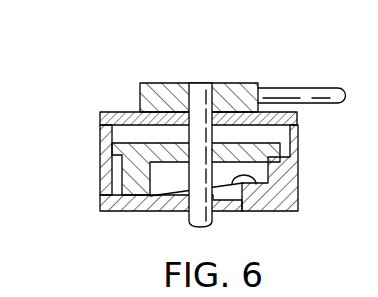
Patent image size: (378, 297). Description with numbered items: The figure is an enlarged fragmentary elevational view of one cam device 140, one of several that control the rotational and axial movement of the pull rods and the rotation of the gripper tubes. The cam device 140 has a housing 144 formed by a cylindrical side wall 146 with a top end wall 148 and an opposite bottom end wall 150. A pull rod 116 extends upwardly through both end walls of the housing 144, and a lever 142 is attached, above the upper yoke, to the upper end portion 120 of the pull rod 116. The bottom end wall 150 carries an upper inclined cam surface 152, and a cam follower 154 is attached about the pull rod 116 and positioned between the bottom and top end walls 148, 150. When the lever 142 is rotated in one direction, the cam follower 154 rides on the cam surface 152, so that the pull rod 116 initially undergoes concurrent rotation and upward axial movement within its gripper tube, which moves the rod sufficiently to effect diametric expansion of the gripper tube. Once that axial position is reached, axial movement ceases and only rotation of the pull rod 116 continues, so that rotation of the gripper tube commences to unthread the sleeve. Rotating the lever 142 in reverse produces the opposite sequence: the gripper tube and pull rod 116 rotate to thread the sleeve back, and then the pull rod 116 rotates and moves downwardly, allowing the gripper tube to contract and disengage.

The cam device 140 is at (117, 82).
The top end wall 148 is at (125, 111).
The lever 142 is at (302, 88).
The upper end portion 120 is at (207, 83).
The pull rod 116 is at (220, 221).
The housing 144 is at (293, 155).
The cylindrical side wall 146 is at (102, 168).
The cam follower 154 is at (135, 170).
The bottom end wall 150 is at (135, 202).
The cam surface 152 is at (247, 178).